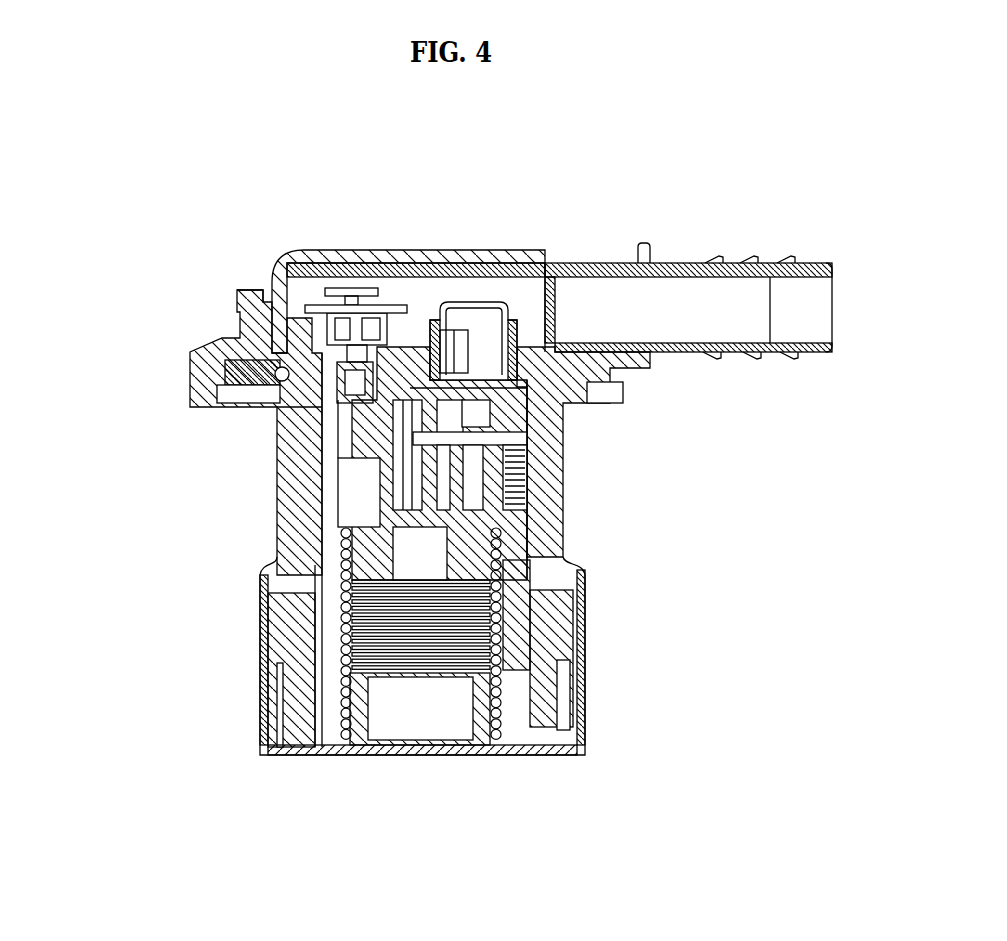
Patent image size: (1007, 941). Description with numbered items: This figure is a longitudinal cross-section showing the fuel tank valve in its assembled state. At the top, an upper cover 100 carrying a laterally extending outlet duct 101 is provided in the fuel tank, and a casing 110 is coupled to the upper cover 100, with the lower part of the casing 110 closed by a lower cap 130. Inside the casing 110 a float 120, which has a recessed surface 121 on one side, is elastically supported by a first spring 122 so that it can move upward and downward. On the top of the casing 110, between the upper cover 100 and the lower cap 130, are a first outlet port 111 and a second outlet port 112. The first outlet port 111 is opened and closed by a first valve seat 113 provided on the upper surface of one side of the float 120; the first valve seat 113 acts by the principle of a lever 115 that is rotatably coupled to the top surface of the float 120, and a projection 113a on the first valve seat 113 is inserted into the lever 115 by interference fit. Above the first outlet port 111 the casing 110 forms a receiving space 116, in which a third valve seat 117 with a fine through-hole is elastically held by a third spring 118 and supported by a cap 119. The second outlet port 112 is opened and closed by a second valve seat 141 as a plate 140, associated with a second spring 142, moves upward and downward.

The upper cover 100 is at (377, 263).
The outlet duct 101 is at (790, 317).
The casing 110 is at (297, 513).
The first outlet port 111 is at (324, 308).
The second outlet port 112 is at (532, 310).
The first valve seat 113 is at (198, 420).
The projection 113a is at (275, 408).
The lever 115 is at (300, 428).
The receiving space 116 is at (240, 300).
The third valve seat 117 is at (258, 352).
The third spring 118 is at (346, 300).
The cap 119 is at (385, 298).
The float 120 is at (330, 622).
The recessed surface 121 is at (537, 475).
The first spring 122 is at (345, 695).
The lower cap 130 is at (540, 722).
The plate 140 is at (520, 428).
The second valve seat 141 is at (592, 406).
The second spring 142 is at (527, 458).